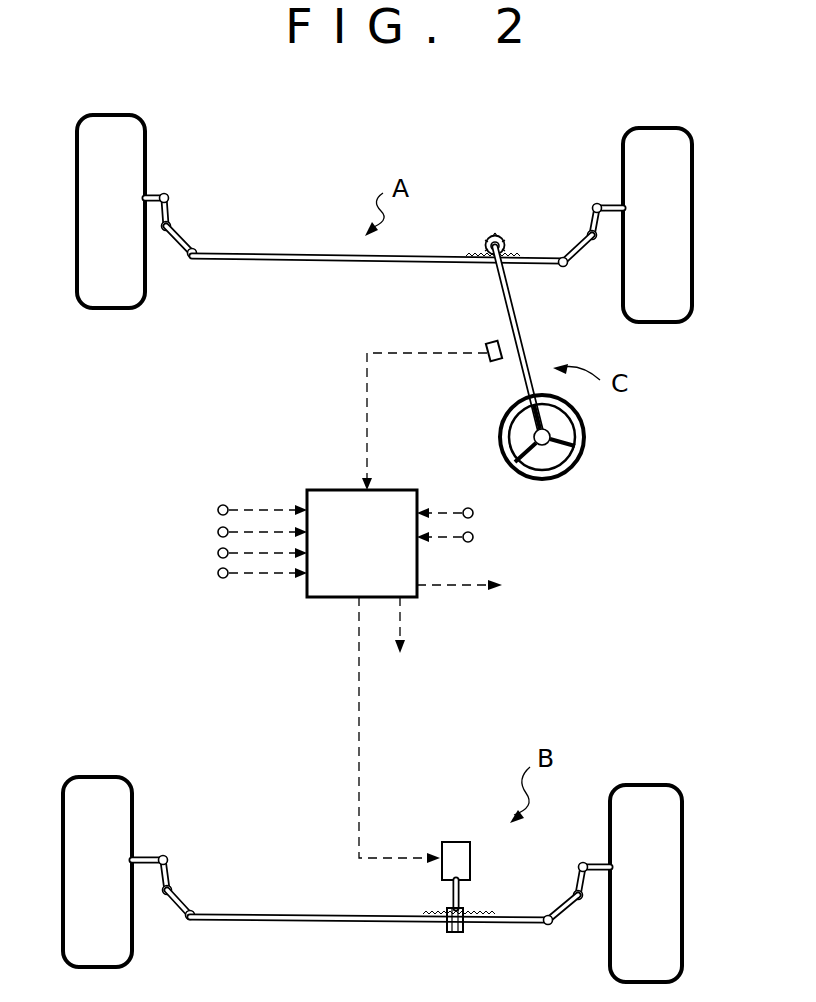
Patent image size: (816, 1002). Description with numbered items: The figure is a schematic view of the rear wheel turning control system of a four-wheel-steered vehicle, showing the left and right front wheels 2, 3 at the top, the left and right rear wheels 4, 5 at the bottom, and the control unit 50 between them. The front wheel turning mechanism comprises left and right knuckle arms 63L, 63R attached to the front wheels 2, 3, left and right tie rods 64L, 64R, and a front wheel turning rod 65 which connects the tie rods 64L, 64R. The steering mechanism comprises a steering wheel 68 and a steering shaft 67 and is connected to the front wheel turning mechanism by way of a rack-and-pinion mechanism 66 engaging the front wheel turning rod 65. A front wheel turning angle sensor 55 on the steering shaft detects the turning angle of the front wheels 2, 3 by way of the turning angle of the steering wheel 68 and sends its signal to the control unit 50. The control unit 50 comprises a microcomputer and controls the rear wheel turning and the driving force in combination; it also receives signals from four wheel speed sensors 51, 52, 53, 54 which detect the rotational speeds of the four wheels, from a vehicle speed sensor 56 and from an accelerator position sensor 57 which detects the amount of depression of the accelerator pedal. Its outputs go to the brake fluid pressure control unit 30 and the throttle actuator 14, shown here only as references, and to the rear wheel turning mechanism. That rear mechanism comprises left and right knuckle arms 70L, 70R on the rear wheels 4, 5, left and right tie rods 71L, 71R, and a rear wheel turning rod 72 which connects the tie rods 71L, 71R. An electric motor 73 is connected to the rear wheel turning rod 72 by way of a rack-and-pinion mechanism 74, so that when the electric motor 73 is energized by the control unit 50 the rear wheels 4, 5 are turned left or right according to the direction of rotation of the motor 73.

The left front wheel 2 is at (88, 225).
The right front wheel 3 is at (673, 300).
The left rear wheel 4 is at (77, 880).
The right rear wheel 5 is at (663, 910).
The left knuckle arm 63L is at (170, 212).
The right knuckle arm 63R is at (585, 225).
The left tie rod 64L is at (178, 248).
The right tie rod 64R is at (583, 260).
The front wheel turning rod 65 is at (343, 263).
The rack-and-pinion mechanism 66 is at (497, 232).
The steering shaft 67 is at (527, 360).
The steering wheel 68 is at (583, 443).
The front wheel turning angle sensor 55 is at (492, 340).
The control unit 50 is at (330, 598).
The wheel speed sensor 51 is at (220, 504).
The wheel speed sensor 52 is at (218, 528).
The wheel speed sensor 53 is at (218, 553).
The wheel speed sensor 54 is at (218, 575).
The vehicle speed sensor 56 is at (473, 511).
The accelerator position sensor 57 is at (473, 539).
The brake fluid pressure control unit 30 is at (486, 588).
The throttle actuator 14 is at (398, 641).
The left knuckle arm 70L is at (173, 875).
The right knuckle arm 70R is at (577, 885).
The left tie rod 71L is at (170, 907).
The right tie rod 71R is at (572, 917).
The rear wheel turning rod 72 is at (308, 923).
The electric motor 73 is at (458, 842).
The rack-and-pinion mechanism 74 is at (450, 933).